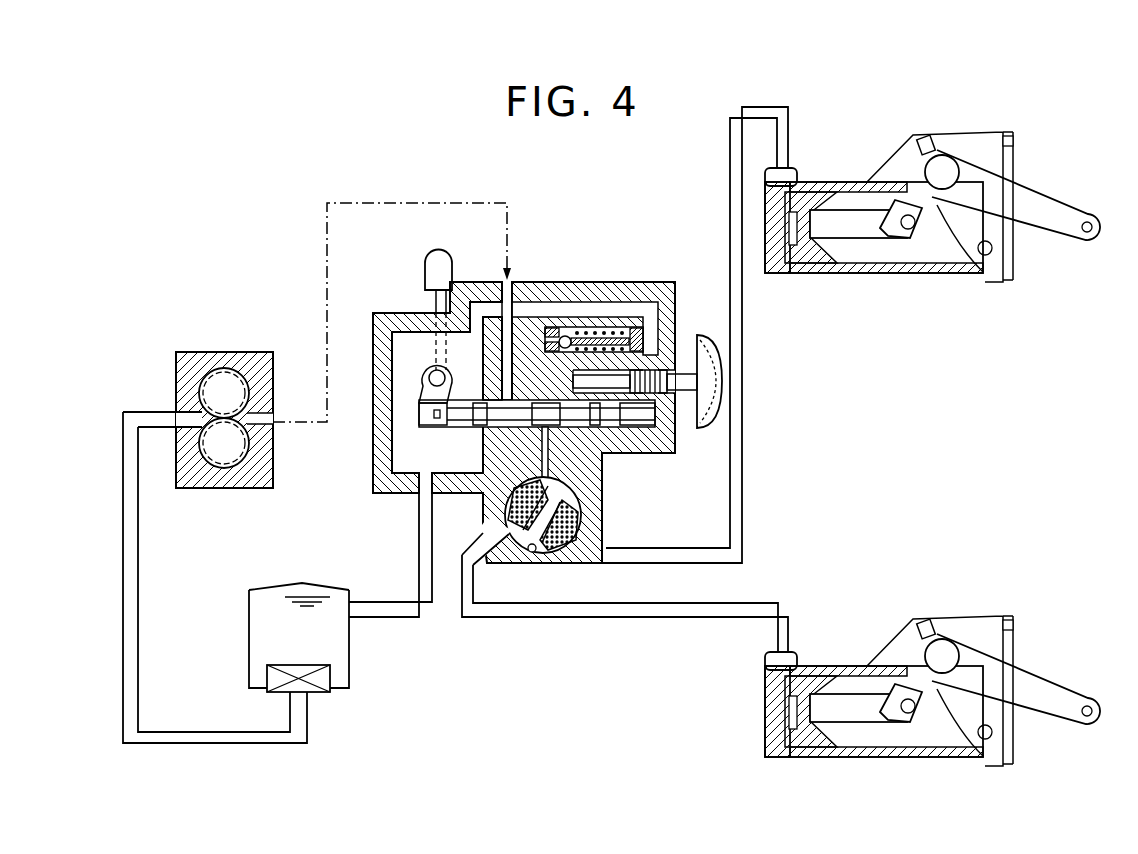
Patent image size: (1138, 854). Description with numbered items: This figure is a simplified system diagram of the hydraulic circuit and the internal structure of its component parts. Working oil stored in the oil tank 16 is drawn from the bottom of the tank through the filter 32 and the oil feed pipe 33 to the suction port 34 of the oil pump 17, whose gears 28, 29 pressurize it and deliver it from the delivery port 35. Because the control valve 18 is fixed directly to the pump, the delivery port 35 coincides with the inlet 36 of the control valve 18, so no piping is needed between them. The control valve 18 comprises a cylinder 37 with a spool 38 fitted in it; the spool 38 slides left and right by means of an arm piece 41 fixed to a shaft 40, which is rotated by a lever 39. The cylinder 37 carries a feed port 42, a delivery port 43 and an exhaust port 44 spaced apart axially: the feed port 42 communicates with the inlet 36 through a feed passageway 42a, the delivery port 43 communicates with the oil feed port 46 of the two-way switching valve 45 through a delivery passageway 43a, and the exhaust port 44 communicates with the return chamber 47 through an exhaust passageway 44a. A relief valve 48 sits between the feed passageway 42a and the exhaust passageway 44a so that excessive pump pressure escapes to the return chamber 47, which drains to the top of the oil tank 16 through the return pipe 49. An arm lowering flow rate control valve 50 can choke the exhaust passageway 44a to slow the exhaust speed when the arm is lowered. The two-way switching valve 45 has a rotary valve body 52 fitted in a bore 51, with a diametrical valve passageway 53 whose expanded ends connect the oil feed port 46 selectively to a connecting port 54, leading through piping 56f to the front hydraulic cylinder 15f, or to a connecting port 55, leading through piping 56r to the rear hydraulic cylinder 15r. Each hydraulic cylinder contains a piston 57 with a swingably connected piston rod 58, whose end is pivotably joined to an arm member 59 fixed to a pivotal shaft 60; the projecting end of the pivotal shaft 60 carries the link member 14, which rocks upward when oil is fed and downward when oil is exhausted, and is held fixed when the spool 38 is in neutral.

The link member 14 is at (1040, 196).
The front hydraulic cylinder 15f is at (840, 175).
The rear hydraulic cylinder 15r is at (874, 675).
The oil tank 16 is at (350, 632).
The oil pump 17 is at (225, 408).
The control valve 18 is at (577, 389).
The pump gear 28 is at (223, 450).
The pump gear 29 is at (240, 380).
The filter 32 is at (330, 680).
The oil feed pipe 33 is at (140, 630).
The suction port 34 is at (176, 408).
The delivery port 35 is at (282, 438).
The inlet 36 is at (508, 280).
The cylinder 37 is at (660, 453).
The spool 38 is at (470, 392).
The lever 39 is at (425, 270).
The shaft 40 is at (430, 372).
The arm piece 41 is at (428, 405).
The feed port 42 is at (475, 427).
The feed passageway 42a is at (474, 305).
The delivery port 43 is at (561, 536).
The delivery passageway 43a is at (582, 496).
The exhaust port 44 is at (556, 460).
The exhaust passageway 44a is at (632, 306).
The two-way switching valve 45 is at (560, 608).
The oil feed port 46 is at (510, 505).
The return chamber 47 is at (376, 378).
The relief valve 48 is at (566, 335).
The return pipe 49 is at (419, 562).
The arm lowering flow rate control valve 50 is at (715, 348).
The bore 51 is at (533, 556).
The rotary valve body 52 is at (560, 538).
The valve passageway 53 is at (585, 520).
The connecting port 54 is at (592, 548).
The connecting port 55 is at (504, 555).
The piping 56f is at (742, 432).
The piping 56r is at (672, 617).
The piston 57 is at (838, 276).
The piston rod 58 is at (870, 236).
The arm member 59 is at (935, 242).
The pivotal shaft 60 is at (946, 170).